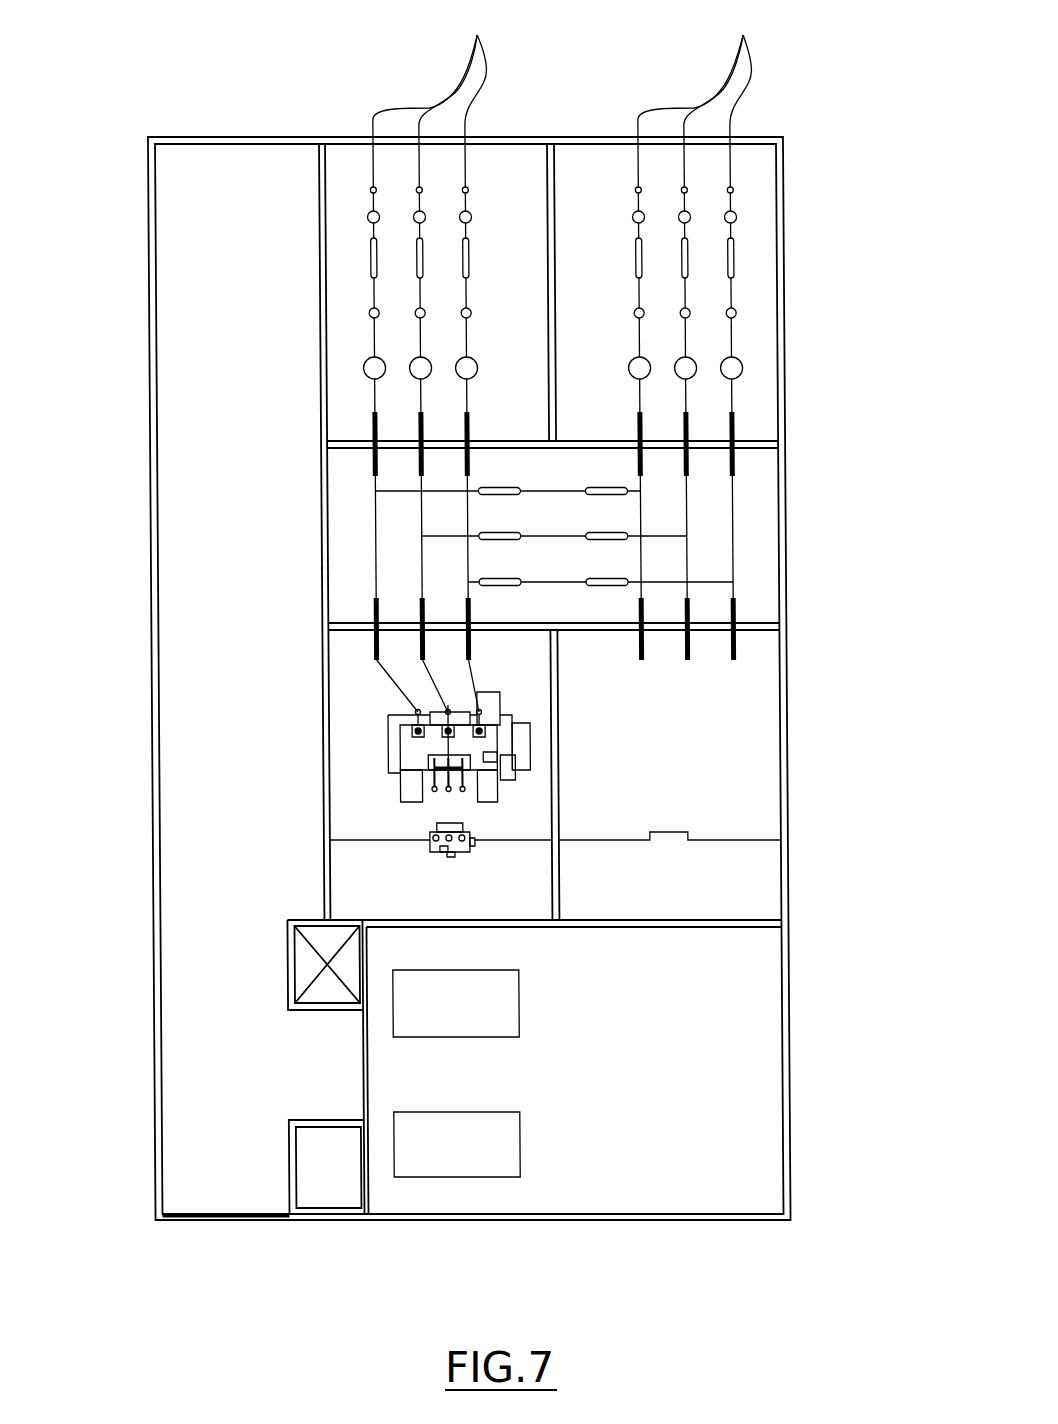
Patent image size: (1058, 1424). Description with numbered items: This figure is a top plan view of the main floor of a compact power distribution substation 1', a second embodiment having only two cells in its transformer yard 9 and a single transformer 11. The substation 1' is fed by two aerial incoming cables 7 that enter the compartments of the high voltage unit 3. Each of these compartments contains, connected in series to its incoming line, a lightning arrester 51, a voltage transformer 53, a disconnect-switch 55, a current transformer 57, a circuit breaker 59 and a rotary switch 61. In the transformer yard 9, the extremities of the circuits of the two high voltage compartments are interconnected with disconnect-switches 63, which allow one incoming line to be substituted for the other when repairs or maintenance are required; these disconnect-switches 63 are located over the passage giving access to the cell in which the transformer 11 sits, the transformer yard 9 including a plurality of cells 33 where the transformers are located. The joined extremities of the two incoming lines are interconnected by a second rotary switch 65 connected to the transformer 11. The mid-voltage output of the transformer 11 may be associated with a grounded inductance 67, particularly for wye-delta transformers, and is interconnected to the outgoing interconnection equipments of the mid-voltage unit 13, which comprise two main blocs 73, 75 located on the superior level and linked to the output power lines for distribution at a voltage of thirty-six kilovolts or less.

The substation 1' is at (423, 678).
The high voltage unit 3 is at (750, 280).
The aerial incoming cables 7 is at (571, 79).
The transformer yard 9 is at (728, 753).
The transformer 11 is at (408, 755).
The mid-voltage unit 13 is at (731, 1078).
The cells 33 is at (622, 815).
The lightning arrester 51 is at (368, 182).
The voltage transformer 53 is at (368, 220).
The disconnect-switch 55 is at (368, 264).
The current transformer 57 is at (368, 305).
The circuit breaker 59 is at (366, 358).
The rotary switch 61 is at (372, 462).
The disconnect-switches 63 is at (601, 493).
The second rotary switch 65 is at (372, 645).
The grounded inductance 67 is at (425, 834).
The main bloc 73 is at (500, 1007).
The main bloc 75 is at (493, 1150).